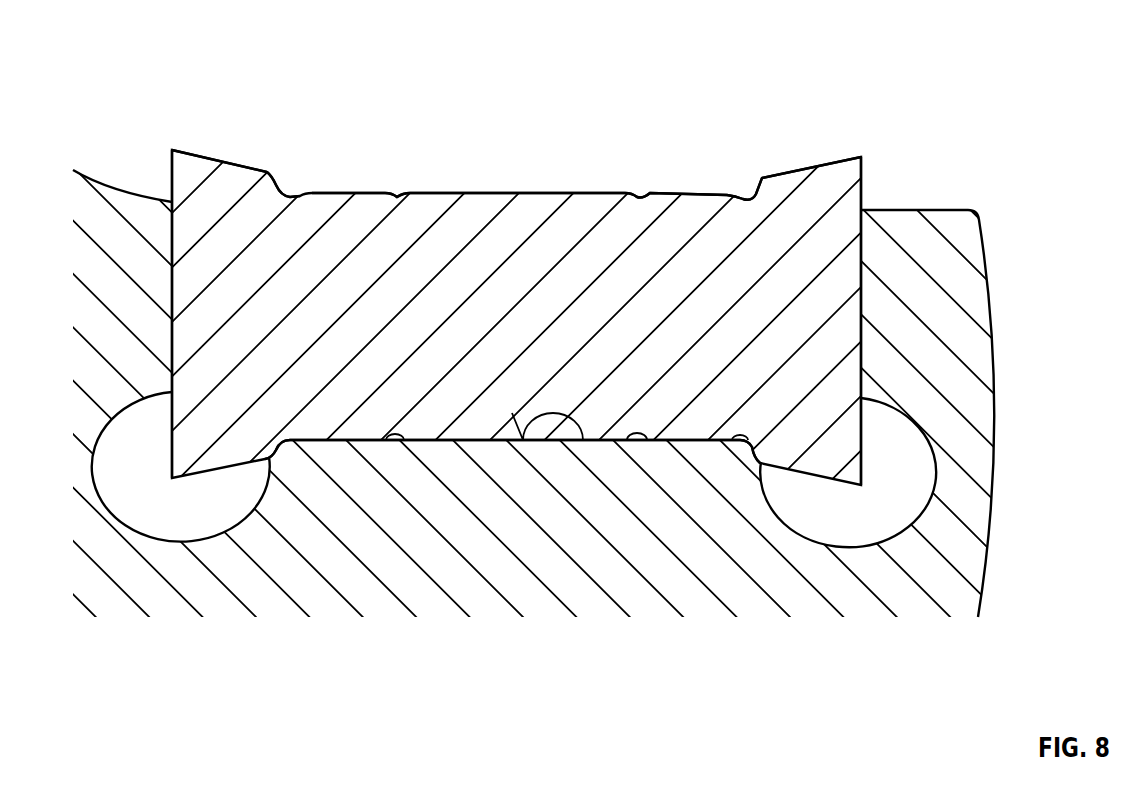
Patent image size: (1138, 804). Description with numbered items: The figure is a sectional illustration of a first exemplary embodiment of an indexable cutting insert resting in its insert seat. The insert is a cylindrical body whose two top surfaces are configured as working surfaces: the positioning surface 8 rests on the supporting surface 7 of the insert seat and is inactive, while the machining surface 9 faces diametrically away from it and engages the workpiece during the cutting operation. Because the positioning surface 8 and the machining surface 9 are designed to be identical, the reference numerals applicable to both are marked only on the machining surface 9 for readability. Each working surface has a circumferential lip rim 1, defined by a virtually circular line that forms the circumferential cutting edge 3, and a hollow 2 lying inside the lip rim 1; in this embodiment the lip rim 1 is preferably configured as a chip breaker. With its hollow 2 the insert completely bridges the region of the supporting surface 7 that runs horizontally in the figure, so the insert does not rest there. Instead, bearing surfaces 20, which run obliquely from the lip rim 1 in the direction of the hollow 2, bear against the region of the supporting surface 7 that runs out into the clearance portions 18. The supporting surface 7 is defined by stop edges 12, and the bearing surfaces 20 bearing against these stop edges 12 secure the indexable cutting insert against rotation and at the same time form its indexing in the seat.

The lip rim 1 is at (218, 158).
The hollow 2 is at (587, 192).
The cutting edge 3 is at (172, 150).
The supporting surface 7 is at (583, 440).
The positioning surface 8 is at (447, 440).
The machining surface 9 is at (495, 172).
The stop edges 12 is at (290, 440).
The clearance portions 18 is at (157, 515).
The bearing surfaces 20 is at (303, 182).